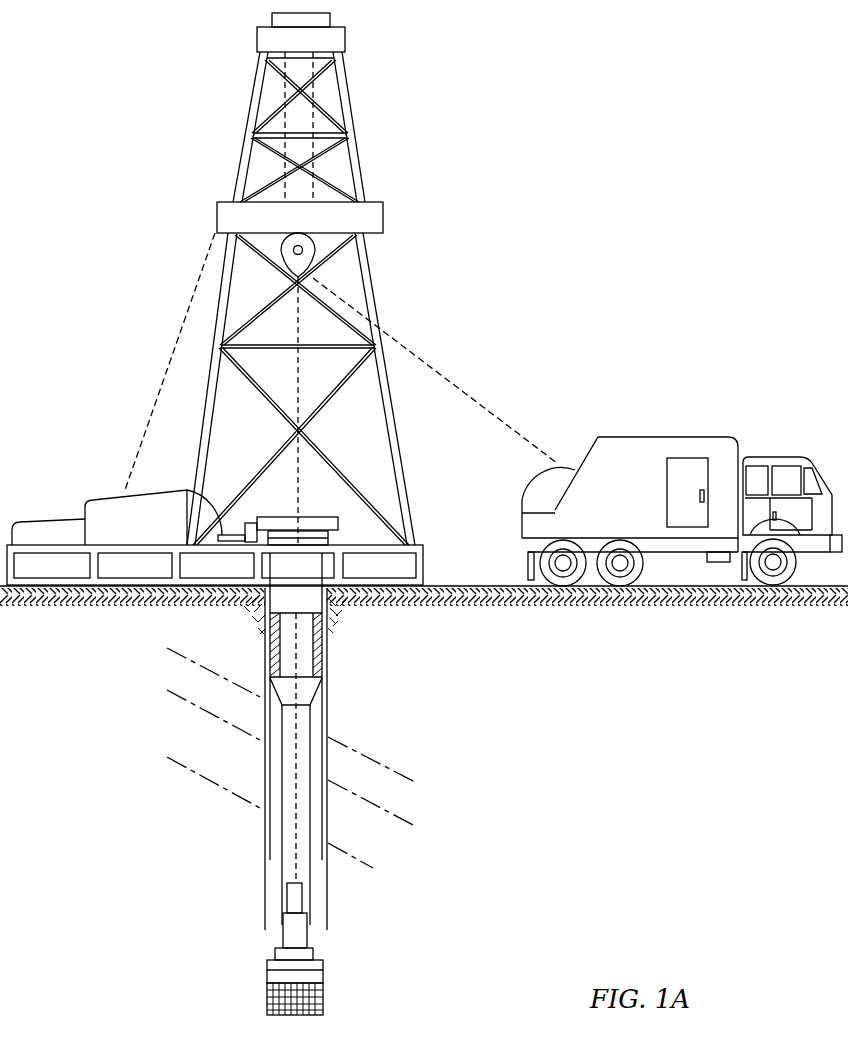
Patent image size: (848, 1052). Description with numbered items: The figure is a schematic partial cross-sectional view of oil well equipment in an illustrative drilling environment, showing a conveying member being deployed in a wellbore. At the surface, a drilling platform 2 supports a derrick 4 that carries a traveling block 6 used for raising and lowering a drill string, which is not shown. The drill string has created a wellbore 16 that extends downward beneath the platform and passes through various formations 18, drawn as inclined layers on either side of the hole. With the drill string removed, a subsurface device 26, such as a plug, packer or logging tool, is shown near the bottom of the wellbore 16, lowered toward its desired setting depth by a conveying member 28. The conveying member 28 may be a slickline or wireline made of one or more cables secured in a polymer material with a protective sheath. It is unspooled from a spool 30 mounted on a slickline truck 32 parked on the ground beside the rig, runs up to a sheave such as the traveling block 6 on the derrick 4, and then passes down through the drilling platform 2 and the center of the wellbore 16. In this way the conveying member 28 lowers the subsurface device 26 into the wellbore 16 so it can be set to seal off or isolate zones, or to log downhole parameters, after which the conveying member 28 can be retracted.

The drilling platform 2 is at (432, 551).
The derrick 4 is at (405, 478).
The traveling block 6 is at (316, 246).
The wellbore 16 is at (328, 707).
The formations 18 is at (155, 757).
The subsurface device 26 is at (348, 1015).
The conveying member 28 is at (483, 403).
The spool 30 is at (572, 462).
The slickline truck 32 is at (655, 435).